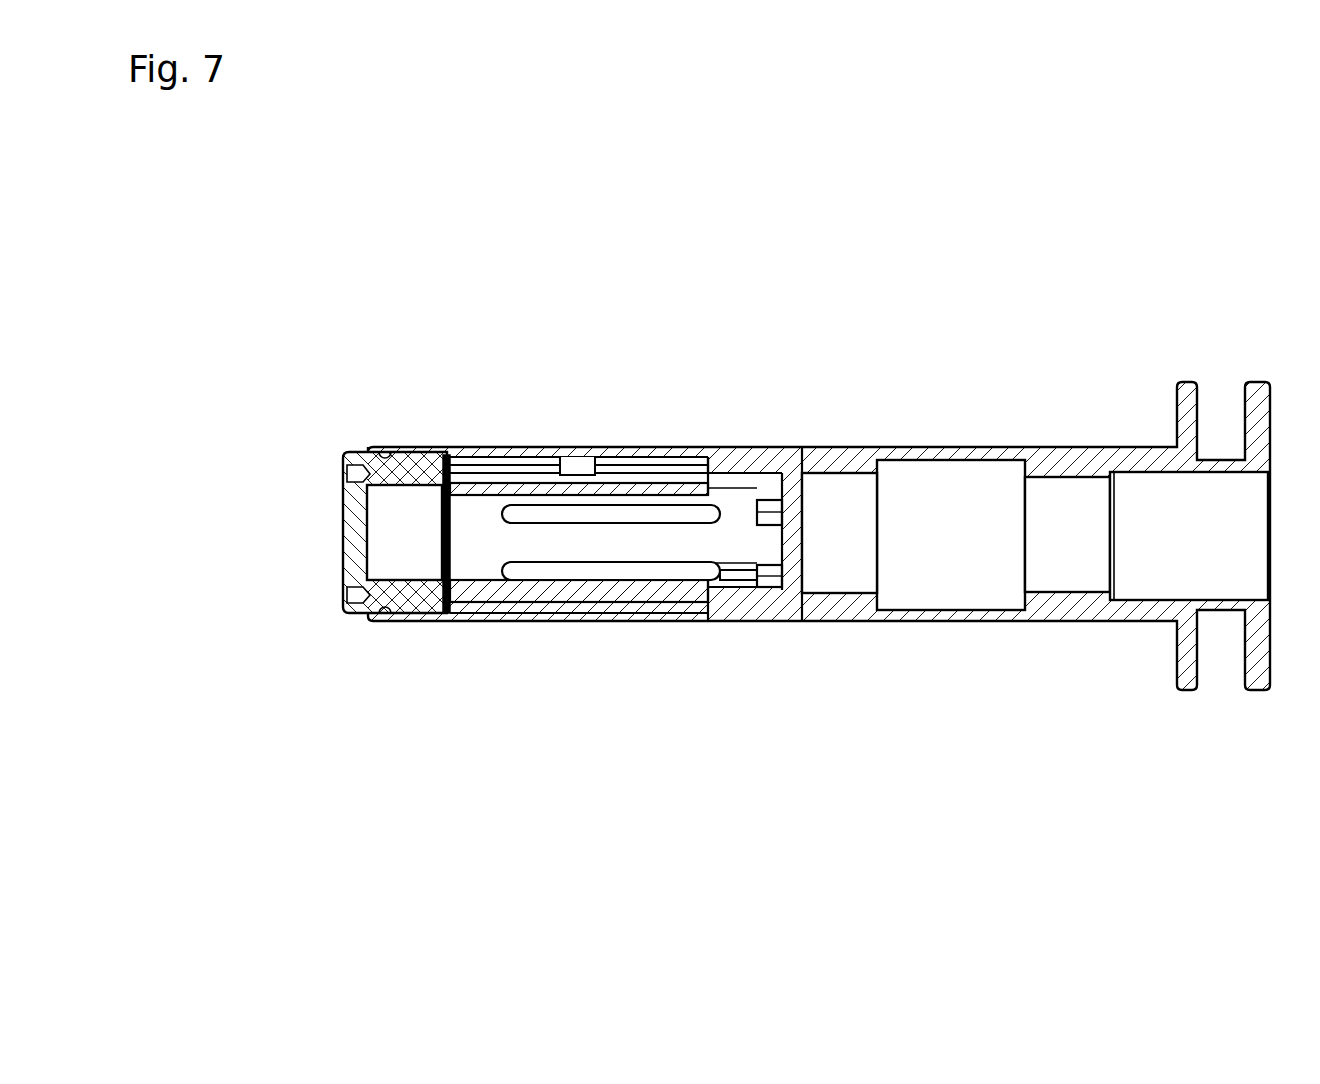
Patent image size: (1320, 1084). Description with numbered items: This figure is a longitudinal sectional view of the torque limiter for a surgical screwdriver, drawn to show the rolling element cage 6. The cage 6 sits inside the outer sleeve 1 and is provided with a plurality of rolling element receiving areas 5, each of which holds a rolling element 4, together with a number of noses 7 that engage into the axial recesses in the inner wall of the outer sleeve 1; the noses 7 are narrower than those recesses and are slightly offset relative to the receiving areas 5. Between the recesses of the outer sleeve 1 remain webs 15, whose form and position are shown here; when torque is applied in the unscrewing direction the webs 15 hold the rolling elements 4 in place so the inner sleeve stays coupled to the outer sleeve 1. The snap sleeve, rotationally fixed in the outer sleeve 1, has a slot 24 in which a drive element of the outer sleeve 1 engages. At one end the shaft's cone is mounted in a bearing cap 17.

The outer sleeve 1 is at (430, 622).
The rolling element 4 is at (645, 575).
The rolling element receiving area 5 is at (505, 527).
The rolling element cage 6 is at (730, 528).
The nose 7 is at (770, 555).
The web 15 is at (722, 585).
The bearing cap 17 is at (358, 512).
The slot 24 is at (555, 452).